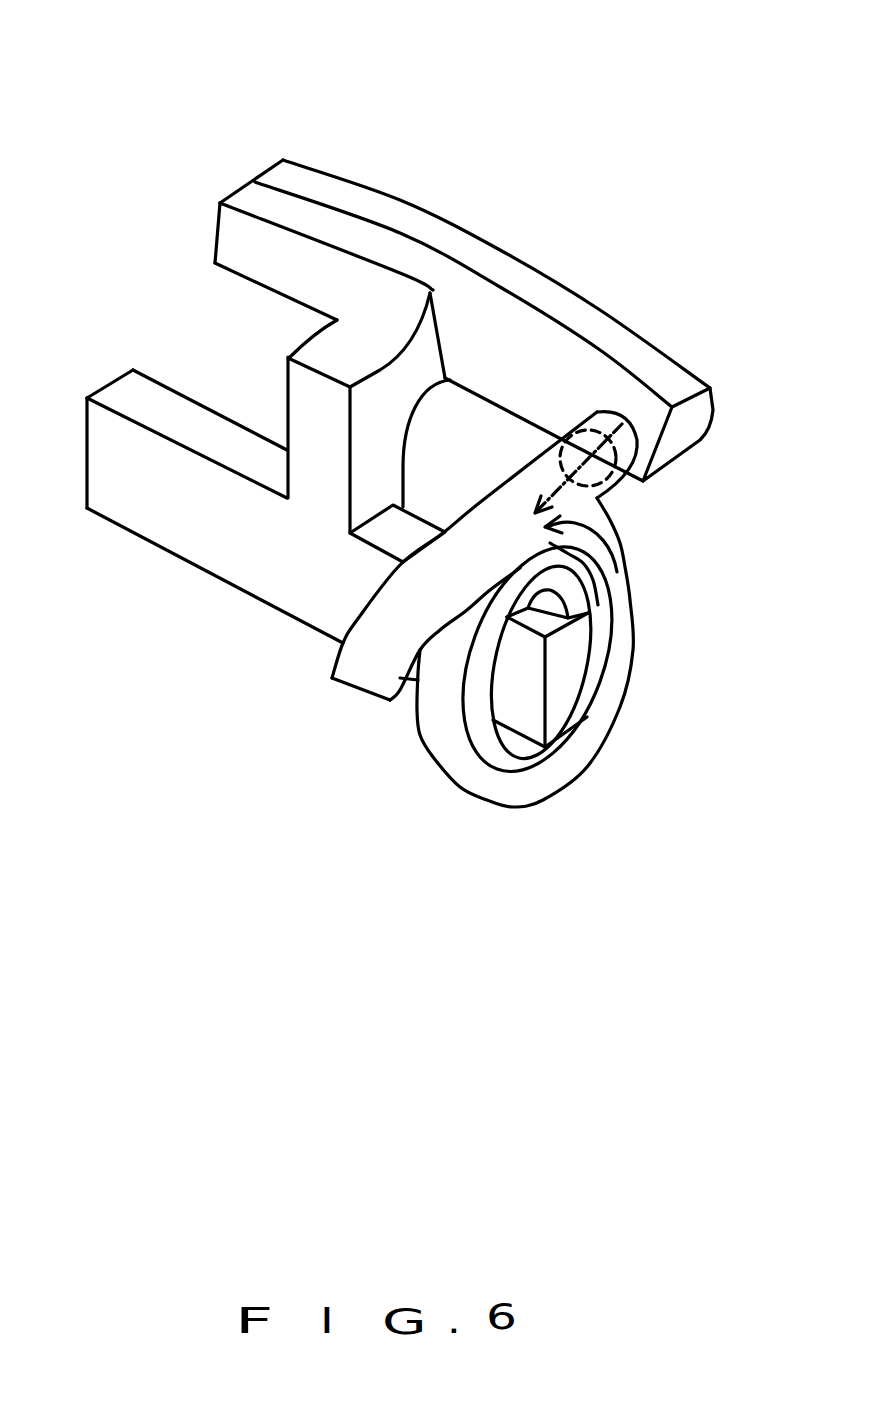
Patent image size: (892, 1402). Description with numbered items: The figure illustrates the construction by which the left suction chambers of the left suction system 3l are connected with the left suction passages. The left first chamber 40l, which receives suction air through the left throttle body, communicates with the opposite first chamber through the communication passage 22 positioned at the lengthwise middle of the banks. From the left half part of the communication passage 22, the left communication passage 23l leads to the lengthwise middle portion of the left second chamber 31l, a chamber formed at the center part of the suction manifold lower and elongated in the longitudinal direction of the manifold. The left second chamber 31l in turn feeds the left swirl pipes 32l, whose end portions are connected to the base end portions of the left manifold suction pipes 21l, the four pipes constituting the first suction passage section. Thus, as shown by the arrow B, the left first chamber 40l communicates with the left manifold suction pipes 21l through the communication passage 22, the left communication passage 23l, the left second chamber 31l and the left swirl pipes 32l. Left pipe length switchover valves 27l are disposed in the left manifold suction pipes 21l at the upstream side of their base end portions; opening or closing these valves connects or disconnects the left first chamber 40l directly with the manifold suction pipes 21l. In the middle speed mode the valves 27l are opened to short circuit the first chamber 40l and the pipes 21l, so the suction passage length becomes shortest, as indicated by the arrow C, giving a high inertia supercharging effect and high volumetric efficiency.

The left suction system 3l is at (202, 133).
The left first chamber 40l is at (495, 252).
The communication passage 22 is at (320, 353).
The left communication passage 23l is at (375, 468).
The left second chamber 31l is at (225, 558).
The left manifold suction pipes 21l is at (368, 670).
The left swirl pipes 32l is at (560, 788).
The left pipe length switchover valves 27l is at (622, 476).
The arrow B is at (613, 551).
The arrow C is at (548, 465).